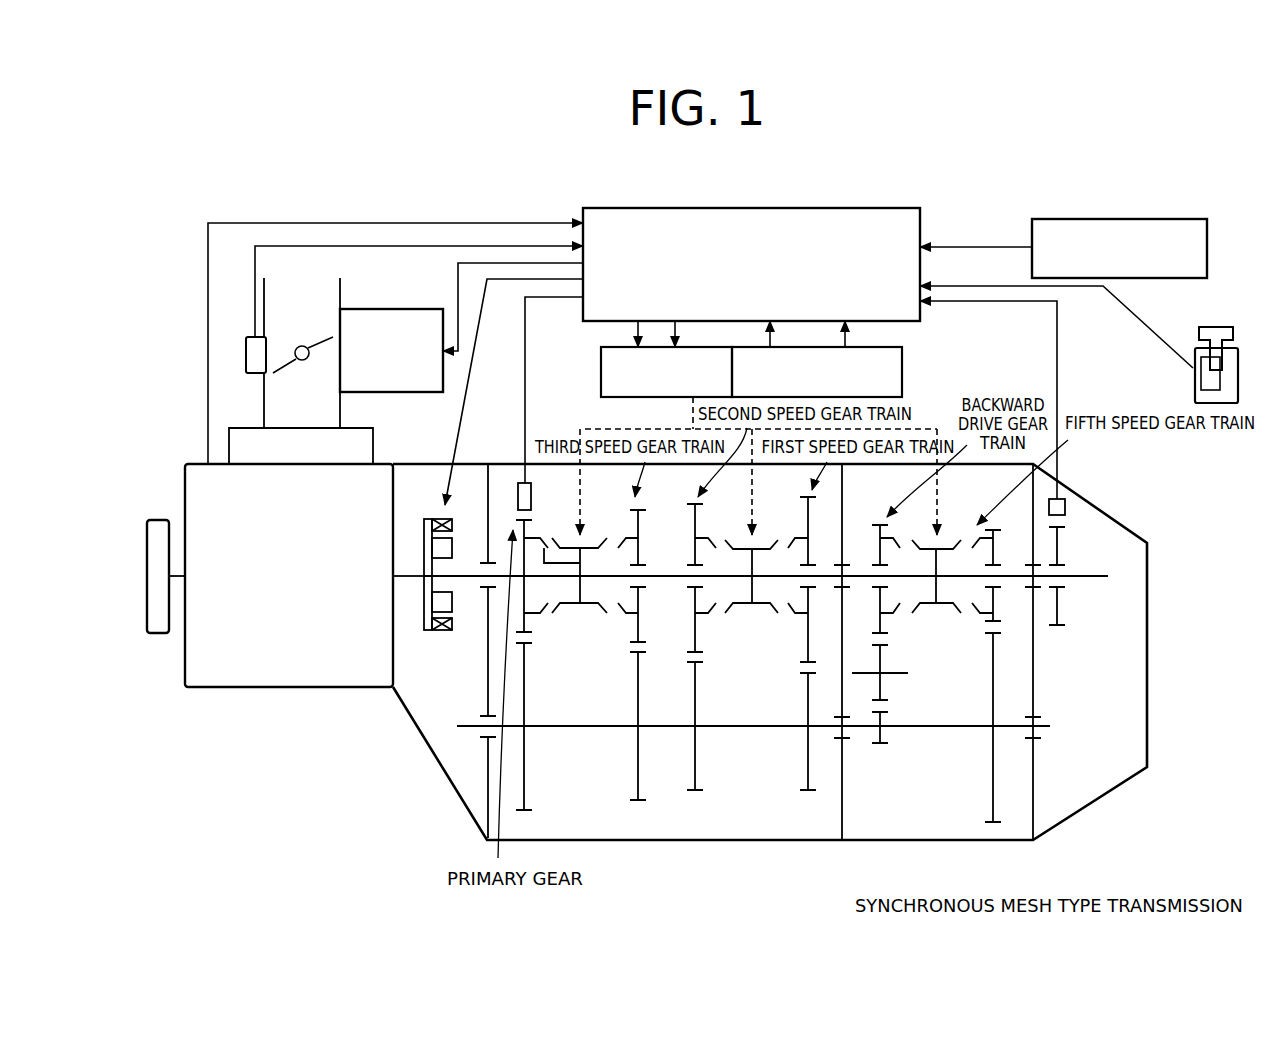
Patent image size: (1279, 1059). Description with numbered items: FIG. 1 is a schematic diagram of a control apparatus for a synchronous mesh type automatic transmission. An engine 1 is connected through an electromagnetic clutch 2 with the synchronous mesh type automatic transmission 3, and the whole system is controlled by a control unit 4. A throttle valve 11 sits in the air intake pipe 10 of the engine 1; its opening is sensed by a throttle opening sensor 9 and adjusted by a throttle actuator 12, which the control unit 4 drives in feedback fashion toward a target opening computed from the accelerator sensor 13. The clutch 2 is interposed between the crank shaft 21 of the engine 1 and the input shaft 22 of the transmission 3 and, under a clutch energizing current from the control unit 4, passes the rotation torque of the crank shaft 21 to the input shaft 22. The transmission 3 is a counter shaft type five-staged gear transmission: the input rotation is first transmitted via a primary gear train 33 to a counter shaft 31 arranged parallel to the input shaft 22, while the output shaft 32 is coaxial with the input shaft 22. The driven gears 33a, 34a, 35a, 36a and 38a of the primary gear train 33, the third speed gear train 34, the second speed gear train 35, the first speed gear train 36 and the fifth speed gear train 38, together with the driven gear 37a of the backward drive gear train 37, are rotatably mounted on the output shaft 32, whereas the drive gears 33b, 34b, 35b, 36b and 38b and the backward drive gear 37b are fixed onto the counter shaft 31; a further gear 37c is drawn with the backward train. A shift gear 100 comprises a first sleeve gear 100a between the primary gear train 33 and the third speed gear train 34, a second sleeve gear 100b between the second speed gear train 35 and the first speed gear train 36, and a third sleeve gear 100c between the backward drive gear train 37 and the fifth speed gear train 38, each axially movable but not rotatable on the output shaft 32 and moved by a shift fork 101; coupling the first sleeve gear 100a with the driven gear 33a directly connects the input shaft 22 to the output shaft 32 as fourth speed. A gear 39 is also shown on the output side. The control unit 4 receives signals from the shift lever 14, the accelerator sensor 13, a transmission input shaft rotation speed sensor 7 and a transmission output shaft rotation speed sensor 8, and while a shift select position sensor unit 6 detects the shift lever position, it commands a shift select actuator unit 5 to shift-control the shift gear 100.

The engine 1 is at (273, 691).
The electromagnetic clutch 2 is at (441, 640).
The synchronous mesh type automatic transmission 3 is at (862, 858).
The control unit 4 is at (775, 208).
The shift select actuator unit 5 is at (598, 358).
The shift select position sensor unit 6 is at (905, 380).
The transmission input shaft rotation speed sensor 7 is at (520, 478).
The transmission output shaft rotation speed sensor 8 is at (1065, 495).
The throttle opening sensor 9 is at (250, 335).
The air intake pipe 10 is at (341, 290).
The throttle valve 11 is at (283, 370).
The throttle actuator 12 is at (405, 308).
The accelerator sensor 13 is at (1120, 219).
The shift lever 14 is at (1195, 388).
The crank shaft 21 is at (408, 570).
The input shaft 22 is at (467, 570).
The counter shaft 31 is at (570, 732).
The output shaft 32 is at (1083, 577).
The primary gear train 33 is at (527, 582).
The driven gear of primary gear train 33a is at (528, 525).
The drive gear of primary gear train 33b is at (526, 683).
The third speed gear train 34 is at (642, 505).
The driven gear of third speed gear train 34a is at (641, 527).
The drive gear of third speed gear train 34b is at (640, 700).
The second speed gear train 35 is at (707, 500).
The driven gear of second speed gear train 35a is at (697, 528).
The drive gear of second speed gear train 35b is at (695, 700).
The first speed gear train 36 is at (802, 507).
The driven gear of first speed gear train 36a is at (808, 528).
The drive gear of first speed gear train 36b is at (807, 694).
The backward drive gear train 37 is at (888, 531).
The driven gear of backward drive gear train 37a is at (880, 530).
The drive gear of backward drive gear train 37b is at (882, 688).
The backward idler gear 37c is at (882, 741).
The fifth speed gear train 38 is at (990, 560).
The driven gear of fifth speed gear train 38a is at (995, 545).
The drive gear of fifth speed gear train 38b is at (995, 677).
The output gear 39 is at (1060, 600).
The shift gear 100 is at (737, 628).
The first sleeve gear 100a is at (572, 610).
The second sleeve gear 100b is at (765, 613).
The third sleeve gear 100c is at (925, 610).
The shift fork 101 is at (918, 427).